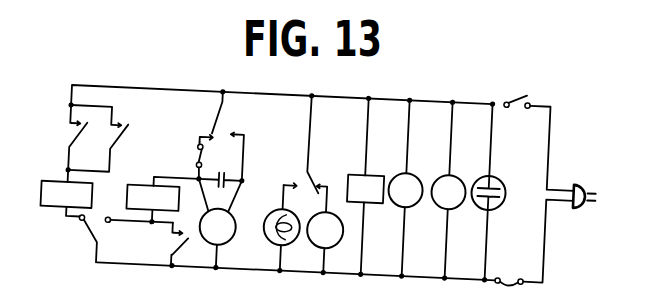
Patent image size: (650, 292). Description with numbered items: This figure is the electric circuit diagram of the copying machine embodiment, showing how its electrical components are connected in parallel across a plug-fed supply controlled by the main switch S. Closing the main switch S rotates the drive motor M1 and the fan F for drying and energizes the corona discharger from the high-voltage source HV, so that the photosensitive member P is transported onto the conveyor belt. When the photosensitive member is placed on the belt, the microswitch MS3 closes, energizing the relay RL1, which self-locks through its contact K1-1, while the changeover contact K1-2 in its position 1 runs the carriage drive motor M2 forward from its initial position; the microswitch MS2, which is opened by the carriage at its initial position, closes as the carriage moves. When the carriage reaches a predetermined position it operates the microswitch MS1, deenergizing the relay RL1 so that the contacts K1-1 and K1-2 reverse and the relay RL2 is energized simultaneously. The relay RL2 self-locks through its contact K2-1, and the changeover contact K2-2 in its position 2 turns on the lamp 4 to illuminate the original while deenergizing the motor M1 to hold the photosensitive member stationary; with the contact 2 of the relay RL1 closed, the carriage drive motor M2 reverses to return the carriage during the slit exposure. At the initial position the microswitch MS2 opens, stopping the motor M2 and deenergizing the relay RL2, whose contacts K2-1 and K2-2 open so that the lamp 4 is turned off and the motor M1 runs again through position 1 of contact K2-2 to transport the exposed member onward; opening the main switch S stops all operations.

The contact K1-1 is at (60, 142).
The microswitch MS3 is at (116, 139).
The microswitch MS2 is at (196, 145).
The contact K1-2 is at (234, 136).
The contact K2-2 is at (314, 161).
The contact K2-1 is at (159, 244).
The relay RL1 is at (66, 195).
The relay RL2 is at (162, 200).
The microswitch MS1 is at (95, 236).
The carriage drive motor M2 is at (218, 224).
The drive motor M1 is at (325, 229).
The illumination lamp 4 is at (280, 203).
The contact 2 is at (183, 179).
The contact 1 is at (217, 192).
The high-voltage source HV is at (366, 186).
The photosensitive member P is at (406, 188).
The fan for drying F is at (449, 190).
The main switch S is at (518, 76).